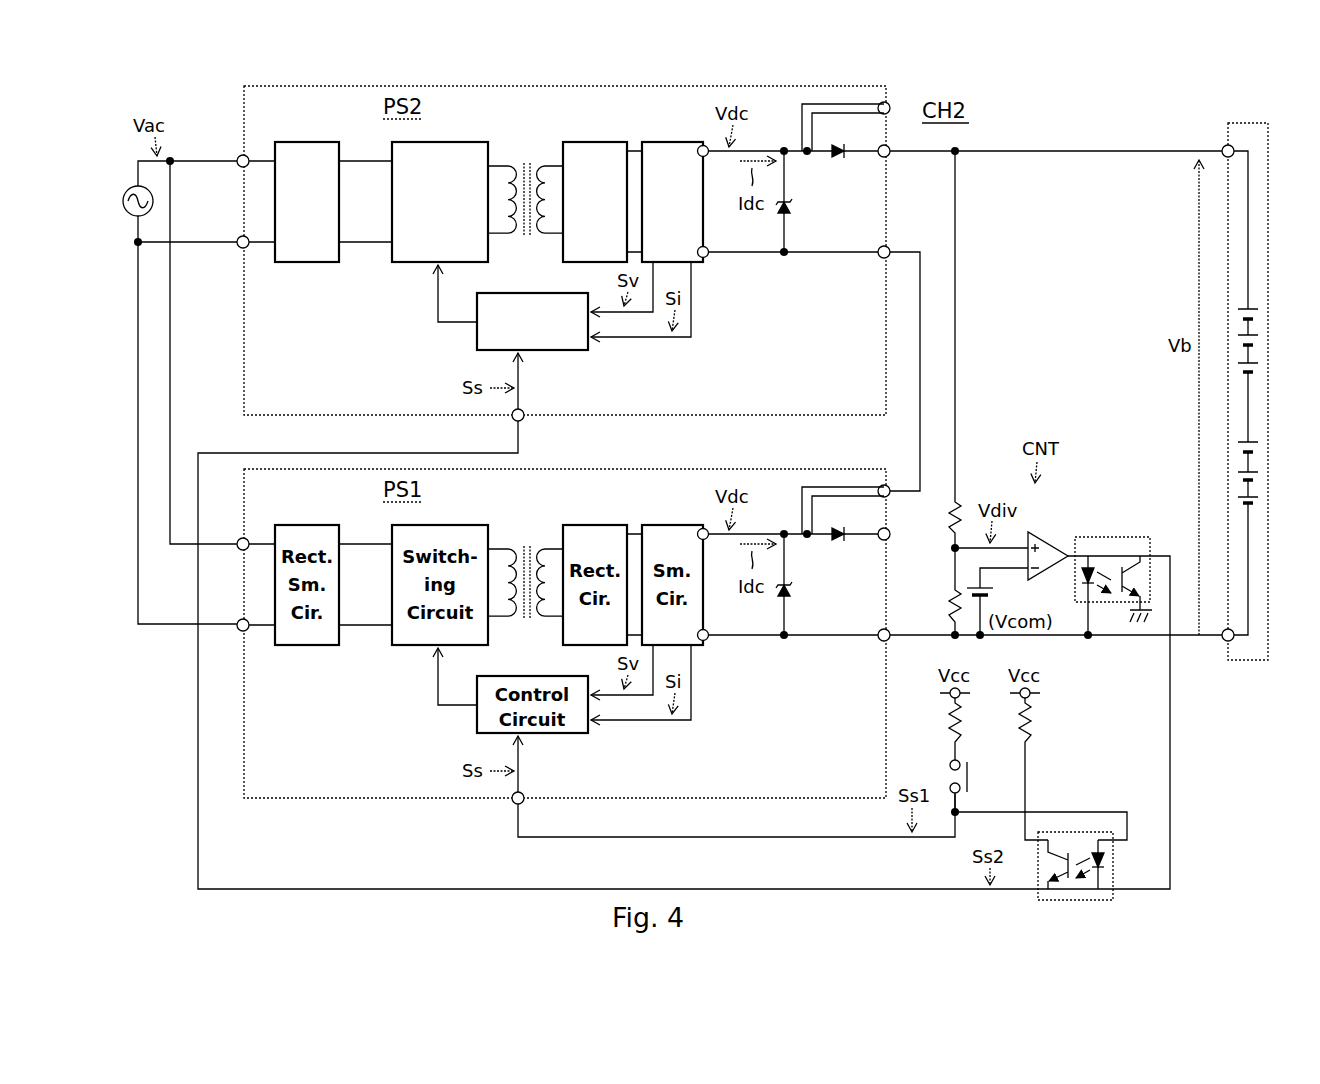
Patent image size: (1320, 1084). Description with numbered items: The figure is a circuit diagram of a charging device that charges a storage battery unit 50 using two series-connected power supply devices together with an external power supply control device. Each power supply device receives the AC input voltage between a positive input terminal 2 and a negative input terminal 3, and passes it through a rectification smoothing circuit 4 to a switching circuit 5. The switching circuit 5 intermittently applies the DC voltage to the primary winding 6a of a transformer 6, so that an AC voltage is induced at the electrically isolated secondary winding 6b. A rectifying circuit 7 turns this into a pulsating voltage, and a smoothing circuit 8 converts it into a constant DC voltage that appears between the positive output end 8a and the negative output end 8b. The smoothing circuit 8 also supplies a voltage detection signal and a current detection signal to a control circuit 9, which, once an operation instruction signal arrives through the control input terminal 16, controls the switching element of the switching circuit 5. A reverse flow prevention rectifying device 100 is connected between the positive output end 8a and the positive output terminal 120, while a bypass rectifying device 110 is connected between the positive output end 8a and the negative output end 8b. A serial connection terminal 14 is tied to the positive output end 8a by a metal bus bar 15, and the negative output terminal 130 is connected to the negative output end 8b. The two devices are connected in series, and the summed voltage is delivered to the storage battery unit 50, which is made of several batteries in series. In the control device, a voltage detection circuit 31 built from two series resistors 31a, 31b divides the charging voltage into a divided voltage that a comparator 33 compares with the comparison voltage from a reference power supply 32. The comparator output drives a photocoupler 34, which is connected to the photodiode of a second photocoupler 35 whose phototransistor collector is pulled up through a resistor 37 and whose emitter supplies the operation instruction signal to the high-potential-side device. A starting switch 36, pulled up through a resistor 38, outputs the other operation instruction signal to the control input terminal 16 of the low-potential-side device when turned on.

The positive input terminal 2 is at (243, 155).
The negative input terminal 3 is at (245, 248).
The rectification smoothing circuit 4 is at (318, 142).
The switching circuit 5 is at (432, 142).
The transformer 6 is at (525, 170).
The primary winding 6a is at (509, 165).
The secondary winding 6b is at (546, 165).
The rectifying circuit 7 is at (590, 142).
The smoothing circuit 8 is at (668, 142).
The positive output end 8a is at (708, 156).
The negative output end 8b is at (720, 233).
The control circuit 9 is at (555, 293).
The serial connection terminal 14 is at (872, 236).
The bus bar 15 is at (872, 125).
The control input terminal 16 is at (523, 411).
The reverse flow prevention rectifying device 100 is at (843, 173).
The bypass rectifying device 110 is at (831, 201).
The positive output terminal 120 is at (838, 158).
The negative output terminal 130 is at (790, 208).
The voltage detection circuit 31 is at (947, 395).
The resistor 31a is at (950, 505).
The resistor 31b is at (950, 614).
The reference power supply 32 is at (992, 590).
The comparator 33 is at (1038, 531).
The photocoupler 34 is at (1118, 537).
The photocoupler 35 is at (1080, 832).
The starting switch 36 is at (967, 775).
The resistor 37 is at (1035, 738).
The resistor 38 is at (950, 741).
The storage battery unit 50 is at (1244, 123).